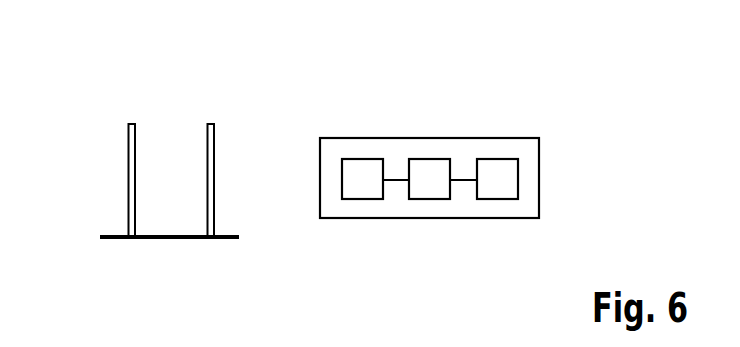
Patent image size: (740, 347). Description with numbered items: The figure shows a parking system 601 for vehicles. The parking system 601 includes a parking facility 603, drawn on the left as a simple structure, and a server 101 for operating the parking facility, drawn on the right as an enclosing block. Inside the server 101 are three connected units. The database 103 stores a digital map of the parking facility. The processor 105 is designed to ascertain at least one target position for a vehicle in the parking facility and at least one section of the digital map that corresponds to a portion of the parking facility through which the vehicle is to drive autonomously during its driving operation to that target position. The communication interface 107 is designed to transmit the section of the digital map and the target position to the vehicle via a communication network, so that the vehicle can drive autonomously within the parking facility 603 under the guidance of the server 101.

The parking system 601 is at (272, 96).
The parking facility 603 is at (157, 198).
The server 101 is at (405, 218).
The database 103 is at (363, 159).
The processor 105 is at (429, 159).
The communication interface 107 is at (494, 159).